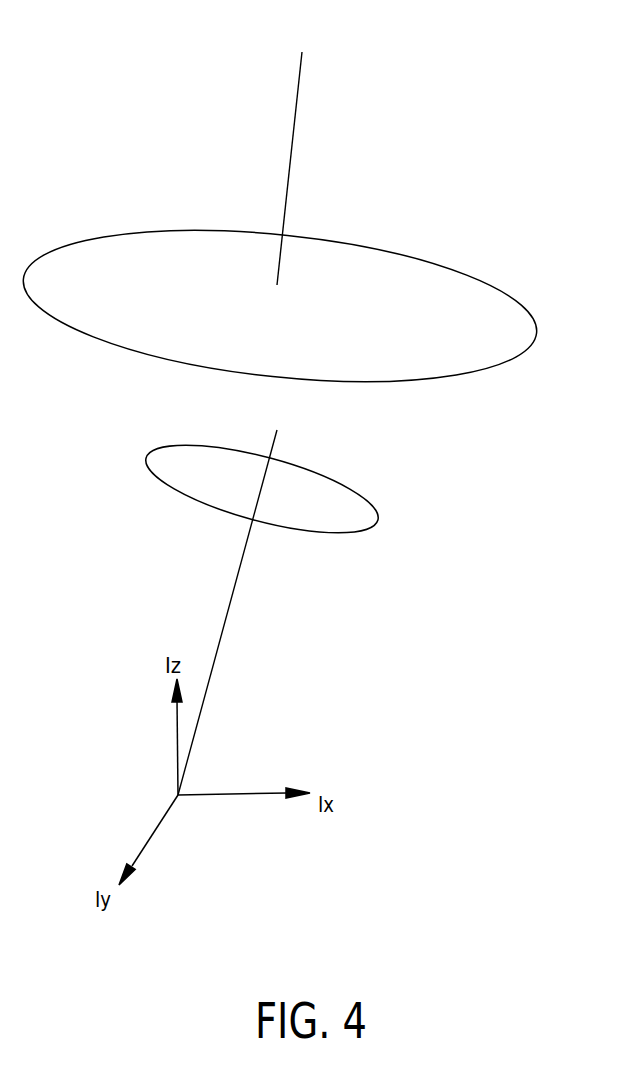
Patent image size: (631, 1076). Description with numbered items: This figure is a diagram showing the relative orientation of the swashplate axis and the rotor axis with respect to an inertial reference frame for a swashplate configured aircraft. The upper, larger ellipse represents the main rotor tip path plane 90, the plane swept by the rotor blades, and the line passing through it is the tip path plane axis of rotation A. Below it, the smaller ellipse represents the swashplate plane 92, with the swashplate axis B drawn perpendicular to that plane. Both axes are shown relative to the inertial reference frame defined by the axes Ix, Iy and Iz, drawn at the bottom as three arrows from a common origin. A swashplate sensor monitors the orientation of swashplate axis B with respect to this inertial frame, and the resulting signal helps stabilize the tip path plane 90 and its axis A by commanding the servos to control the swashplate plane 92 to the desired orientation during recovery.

The tip path plane 90 is at (538, 328).
The swashplate plane 92 is at (378, 521).
The tip path plane axis A is at (293, 148).
The swashplate axis B is at (233, 599).